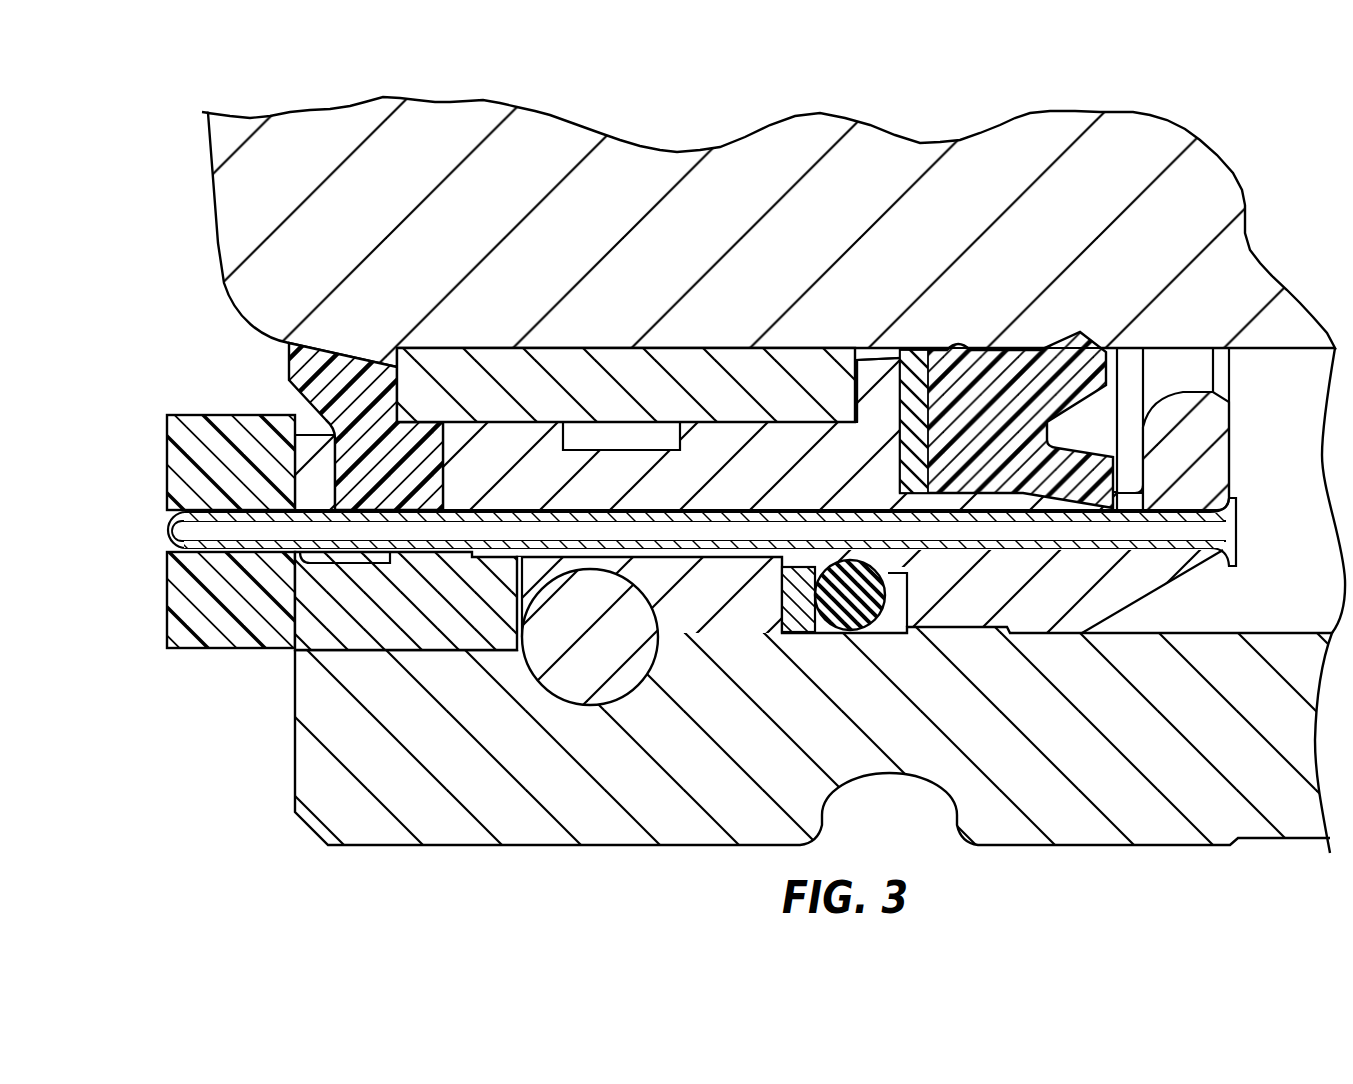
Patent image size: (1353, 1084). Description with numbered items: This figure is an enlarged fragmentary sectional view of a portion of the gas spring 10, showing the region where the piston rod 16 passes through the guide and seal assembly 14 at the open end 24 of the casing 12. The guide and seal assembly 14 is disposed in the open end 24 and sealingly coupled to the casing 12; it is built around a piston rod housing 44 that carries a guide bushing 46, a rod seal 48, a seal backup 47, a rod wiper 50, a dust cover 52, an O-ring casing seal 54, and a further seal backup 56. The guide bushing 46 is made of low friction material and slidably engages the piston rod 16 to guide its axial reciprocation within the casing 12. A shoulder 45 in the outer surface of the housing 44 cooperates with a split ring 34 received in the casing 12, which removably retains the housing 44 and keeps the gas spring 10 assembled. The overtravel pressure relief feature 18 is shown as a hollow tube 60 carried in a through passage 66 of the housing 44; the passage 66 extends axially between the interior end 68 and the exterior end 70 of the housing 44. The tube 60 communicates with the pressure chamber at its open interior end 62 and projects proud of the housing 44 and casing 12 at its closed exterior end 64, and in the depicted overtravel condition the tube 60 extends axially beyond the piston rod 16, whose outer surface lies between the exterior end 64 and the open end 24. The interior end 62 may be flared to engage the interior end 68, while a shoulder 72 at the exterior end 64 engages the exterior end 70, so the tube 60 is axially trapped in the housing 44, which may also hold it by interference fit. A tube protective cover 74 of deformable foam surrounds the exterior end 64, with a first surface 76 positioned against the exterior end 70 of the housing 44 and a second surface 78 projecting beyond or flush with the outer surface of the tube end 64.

The gas spring 10 is at (178, 140).
The casing 12 is at (1112, 877).
The guide and seal assembly 14 is at (275, 410).
The piston rod 16 is at (198, 220).
The overtravel pressure relief feature 18 is at (148, 496).
The open end 24 is at (320, 746).
The split ring 34 is at (547, 655).
The piston rod housing 44 is at (1244, 437).
The shoulder 45 is at (636, 588).
The guide bushing 46 is at (620, 342).
The seal backup 47 is at (913, 342).
The rod seal 48 is at (1063, 332).
The rod wiper 50 is at (276, 350).
The dust cover 52 is at (286, 628).
The O-ring casing seal 54 is at (868, 614).
The seal backup 56 is at (802, 617).
The tube 60 is at (148, 546).
The interior end 62 is at (1237, 531).
The exterior end 64 is at (166, 527).
The through passage 66 is at (1005, 551).
The interior end 68 is at (1215, 468).
The exterior end 70 is at (300, 478).
The shoulder 72 is at (304, 560).
The tube protective cover 74 is at (182, 656).
The first surface 76 is at (300, 620).
The second surface 78 is at (168, 600).